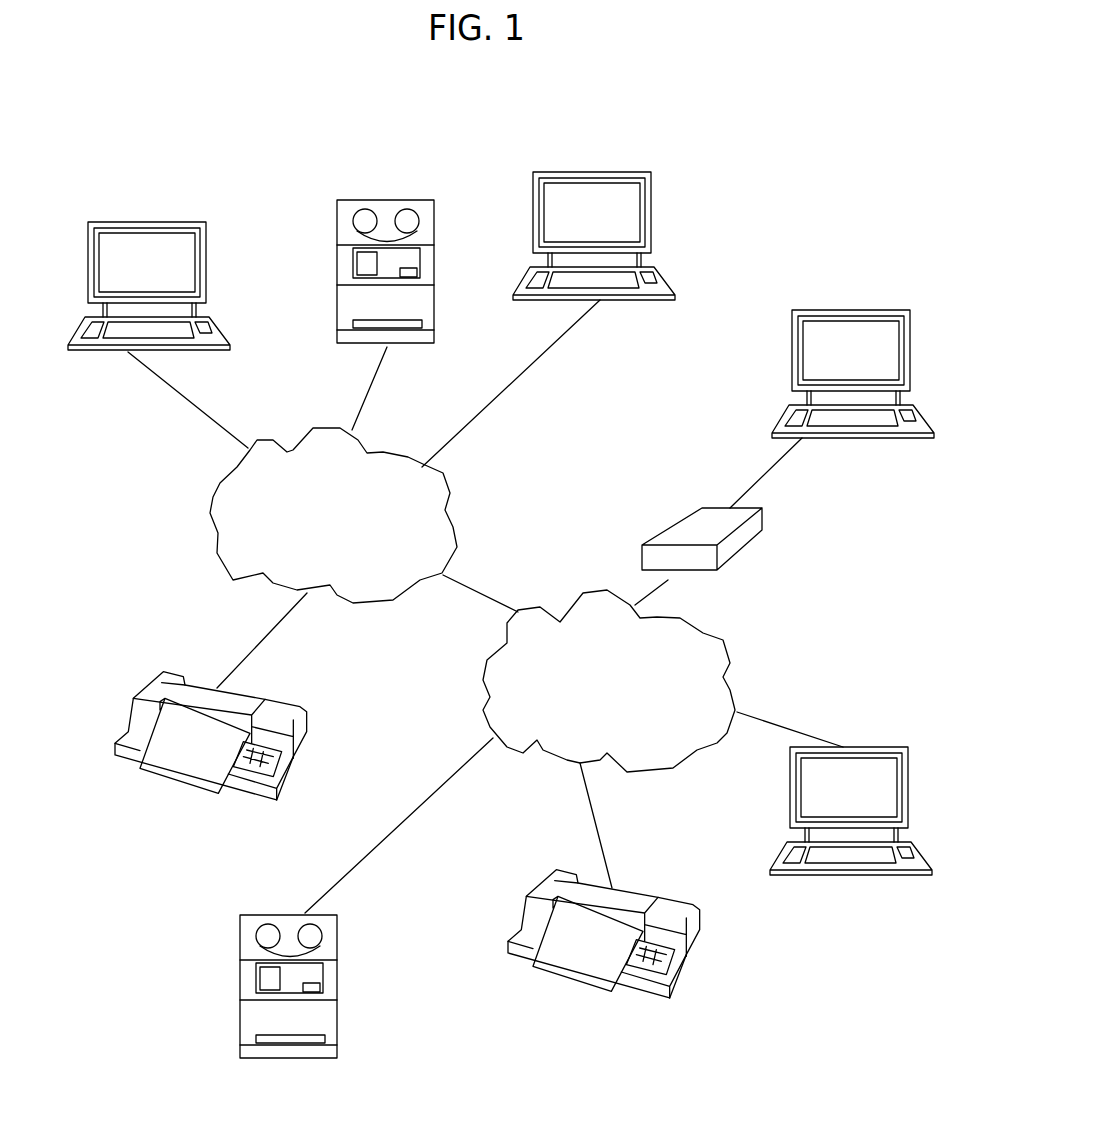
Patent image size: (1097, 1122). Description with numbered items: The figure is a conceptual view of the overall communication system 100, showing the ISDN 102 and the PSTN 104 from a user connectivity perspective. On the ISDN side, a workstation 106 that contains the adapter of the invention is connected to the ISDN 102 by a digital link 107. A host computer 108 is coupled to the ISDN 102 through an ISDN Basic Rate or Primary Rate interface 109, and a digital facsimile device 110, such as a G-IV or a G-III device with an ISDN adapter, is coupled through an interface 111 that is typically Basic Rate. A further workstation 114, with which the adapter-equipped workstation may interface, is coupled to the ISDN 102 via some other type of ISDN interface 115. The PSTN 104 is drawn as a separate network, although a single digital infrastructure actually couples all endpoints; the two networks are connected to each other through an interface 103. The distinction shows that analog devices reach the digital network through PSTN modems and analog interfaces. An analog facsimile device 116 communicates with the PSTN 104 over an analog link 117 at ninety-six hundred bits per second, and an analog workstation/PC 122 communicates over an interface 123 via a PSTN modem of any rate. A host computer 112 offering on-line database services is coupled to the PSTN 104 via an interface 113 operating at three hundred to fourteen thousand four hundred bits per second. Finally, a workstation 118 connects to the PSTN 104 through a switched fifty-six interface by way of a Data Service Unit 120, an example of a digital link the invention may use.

The communication system 100 is at (755, 233).
The ISDN 102 is at (213, 497).
The interface 103 is at (477, 590).
The PSTN 104 is at (703, 633).
The workstation 106 is at (162, 222).
The digital link 107 is at (210, 413).
The host computer 108 is at (398, 198).
The ISDN Basic Rate or Primary Rate interface 109 is at (363, 405).
The digital facsimile device 110 is at (128, 813).
The interface 111 is at (240, 662).
The host computer 112 is at (238, 1037).
The interface 113 is at (410, 817).
The workstation 114 is at (645, 170).
The ISDN interface 115 is at (519, 376).
The analog facsimile device 116 is at (493, 1000).
The analog link 117 is at (597, 825).
The workstation 118 is at (875, 308).
The Data Service Unit (DSU) 120 is at (667, 530).
The analog workstation/PC 122 is at (885, 745).
The interface 123 is at (765, 718).